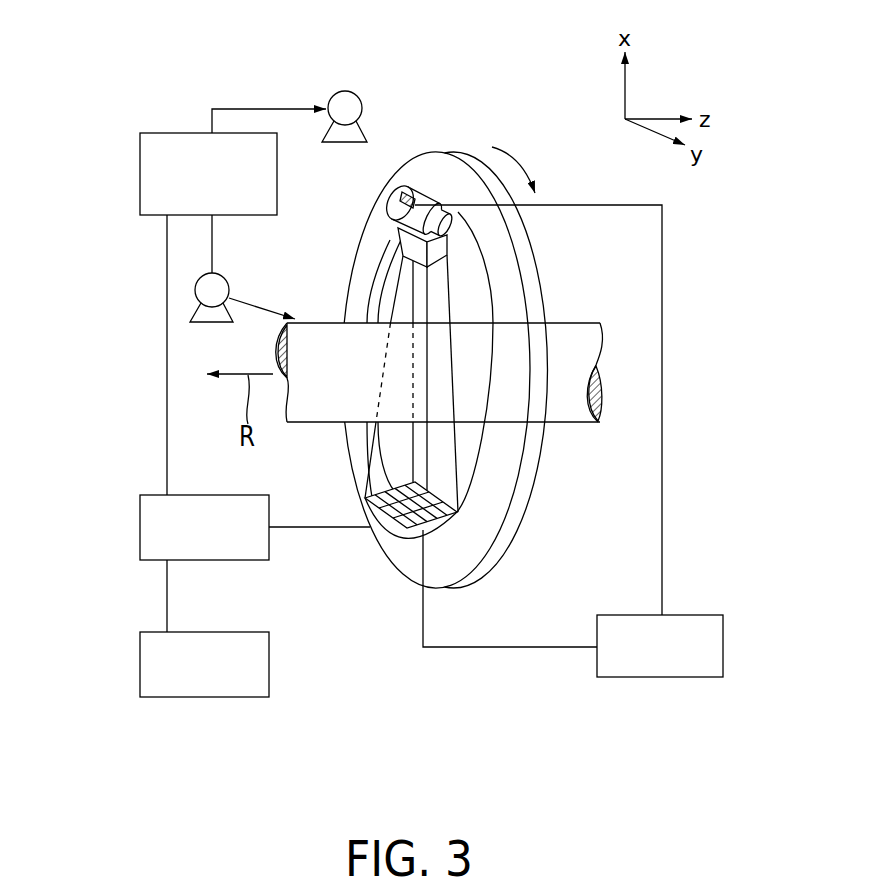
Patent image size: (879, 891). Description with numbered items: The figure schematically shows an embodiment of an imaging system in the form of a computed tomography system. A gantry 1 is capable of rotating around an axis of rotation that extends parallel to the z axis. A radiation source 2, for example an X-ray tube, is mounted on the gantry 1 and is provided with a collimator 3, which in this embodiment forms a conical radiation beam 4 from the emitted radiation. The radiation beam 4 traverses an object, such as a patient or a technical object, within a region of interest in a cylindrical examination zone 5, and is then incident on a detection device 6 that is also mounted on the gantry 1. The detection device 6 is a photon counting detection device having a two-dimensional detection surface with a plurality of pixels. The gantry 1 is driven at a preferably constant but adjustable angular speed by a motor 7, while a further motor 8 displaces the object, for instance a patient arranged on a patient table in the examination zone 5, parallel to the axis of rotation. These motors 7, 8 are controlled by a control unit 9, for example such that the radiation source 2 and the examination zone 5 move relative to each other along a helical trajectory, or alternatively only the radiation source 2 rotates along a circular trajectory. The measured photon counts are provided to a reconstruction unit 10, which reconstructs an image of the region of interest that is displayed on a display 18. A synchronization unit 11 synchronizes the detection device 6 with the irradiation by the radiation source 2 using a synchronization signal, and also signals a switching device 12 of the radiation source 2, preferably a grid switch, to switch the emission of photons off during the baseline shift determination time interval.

The gantry 1 is at (492, 518).
The radiation source 2 is at (413, 190).
The collimator 3 is at (445, 245).
The radiation beam 4 is at (430, 470).
The examination zone 5 is at (322, 323).
The detection device 6 is at (400, 540).
The motor 7 is at (349, 92).
The further motor 8 is at (230, 277).
The control unit 9 is at (155, 133).
The reconstruction unit 10 is at (140, 527).
The synchronization unit 11 is at (597, 666).
The switching device 12 is at (393, 197).
The display 18 is at (140, 662).